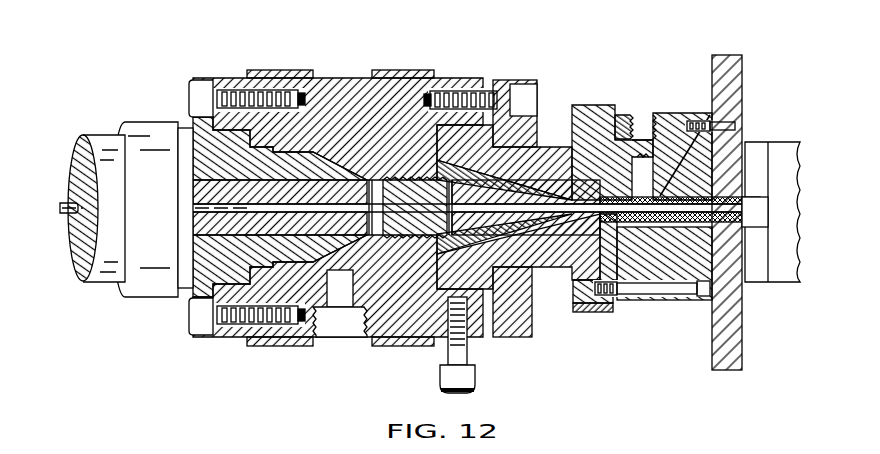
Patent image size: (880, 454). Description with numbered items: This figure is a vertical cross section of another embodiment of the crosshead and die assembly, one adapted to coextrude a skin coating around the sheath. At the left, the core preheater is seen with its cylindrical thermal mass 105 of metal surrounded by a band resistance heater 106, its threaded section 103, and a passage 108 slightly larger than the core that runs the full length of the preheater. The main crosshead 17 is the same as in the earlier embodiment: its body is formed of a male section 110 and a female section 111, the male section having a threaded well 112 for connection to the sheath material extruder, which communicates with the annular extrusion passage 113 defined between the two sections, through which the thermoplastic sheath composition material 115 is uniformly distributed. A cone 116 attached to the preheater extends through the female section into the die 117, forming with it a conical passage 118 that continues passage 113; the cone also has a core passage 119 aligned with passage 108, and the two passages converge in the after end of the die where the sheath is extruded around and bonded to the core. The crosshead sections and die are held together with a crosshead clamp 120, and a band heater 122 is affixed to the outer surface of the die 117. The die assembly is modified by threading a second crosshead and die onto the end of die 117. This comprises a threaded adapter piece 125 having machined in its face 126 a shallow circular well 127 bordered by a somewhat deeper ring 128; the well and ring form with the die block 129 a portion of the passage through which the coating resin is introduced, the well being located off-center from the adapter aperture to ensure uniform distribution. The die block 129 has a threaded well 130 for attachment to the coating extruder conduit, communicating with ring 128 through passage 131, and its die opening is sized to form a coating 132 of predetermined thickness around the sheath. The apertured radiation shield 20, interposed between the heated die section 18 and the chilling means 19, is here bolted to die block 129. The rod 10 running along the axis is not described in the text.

The control cable rod 10 is at (65, 214).
The crosshead 17 is at (329, 70).
The heated die section 18 is at (272, 75).
The chilling means 19 is at (774, 136).
The apertured radiation shield 20 is at (740, 63).
The threaded section 103 is at (428, 72).
The thermal mass 105 is at (97, 133).
The band resistance heater 106 is at (145, 118).
The passage 108 is at (192, 270).
The male section 110 is at (349, 93).
The female section 111 is at (192, 88).
The threaded well 112 is at (347, 327).
The annular extrusion passage 113 is at (413, 268).
The thermoplastic sheath composition material 115 is at (393, 178).
The cone 116 is at (507, 175).
The die 117 is at (548, 262).
The passage 118 is at (535, 182).
The core passage 119 is at (521, 275).
The crosshead clamp 120 is at (505, 80).
The band heater 122 is at (607, 314).
The threaded adapter piece 125 is at (580, 303).
The face 126 is at (640, 298).
The shallow circular well 127 is at (602, 185).
The ring 128 is at (622, 114).
The die block 129 is at (683, 300).
The threaded well 130 is at (643, 127).
The passage 131 is at (664, 197).
The coating 132 is at (712, 225).